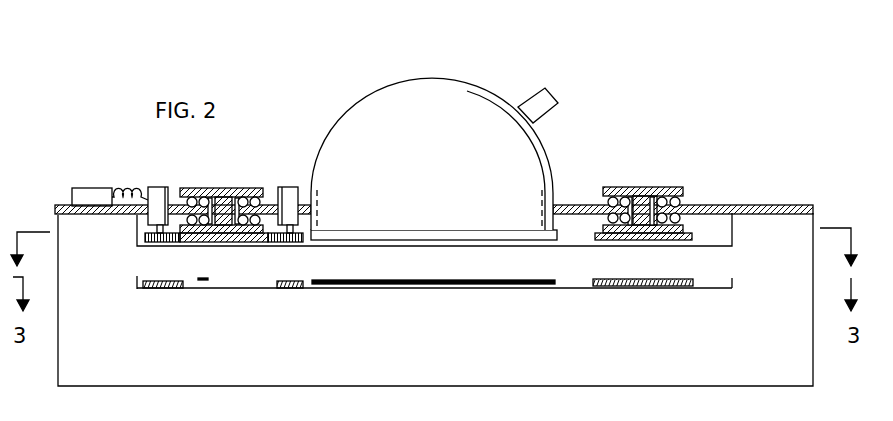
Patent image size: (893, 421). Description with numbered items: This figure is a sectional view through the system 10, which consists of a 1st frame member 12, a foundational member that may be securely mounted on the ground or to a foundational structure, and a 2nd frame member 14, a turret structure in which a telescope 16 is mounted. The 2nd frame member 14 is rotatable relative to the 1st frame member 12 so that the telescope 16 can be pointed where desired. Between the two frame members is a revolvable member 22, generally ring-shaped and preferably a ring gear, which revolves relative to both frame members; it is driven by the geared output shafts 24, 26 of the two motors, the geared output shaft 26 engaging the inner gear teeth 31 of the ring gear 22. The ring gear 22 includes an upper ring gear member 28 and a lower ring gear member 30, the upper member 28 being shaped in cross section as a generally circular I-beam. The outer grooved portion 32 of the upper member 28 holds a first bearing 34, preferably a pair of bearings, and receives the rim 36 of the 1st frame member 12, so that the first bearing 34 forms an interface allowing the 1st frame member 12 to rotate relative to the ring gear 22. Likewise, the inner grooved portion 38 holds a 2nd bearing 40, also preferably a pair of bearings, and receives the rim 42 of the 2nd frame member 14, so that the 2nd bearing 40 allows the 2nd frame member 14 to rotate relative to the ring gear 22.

The system 10 is at (688, 132).
The 1st frame member 12 is at (738, 205).
The 2nd frame member 14 is at (433, 93).
The telescope 16 is at (520, 103).
The revolvable member 22 is at (622, 180).
The geared output shaft 24 is at (168, 244).
The geared output shaft 26 is at (302, 233).
The upper ring gear member 28 is at (233, 188).
The lower ring gear member 30 is at (213, 243).
The inner gear teeth 31 is at (658, 245).
The outer grooved portion 32 is at (163, 187).
The first bearing 34 is at (202, 243).
The rim 36 is at (688, 206).
The inner grooved portion 38 is at (281, 187).
The 2nd bearing 40 is at (258, 244).
The rim 42 is at (300, 198).